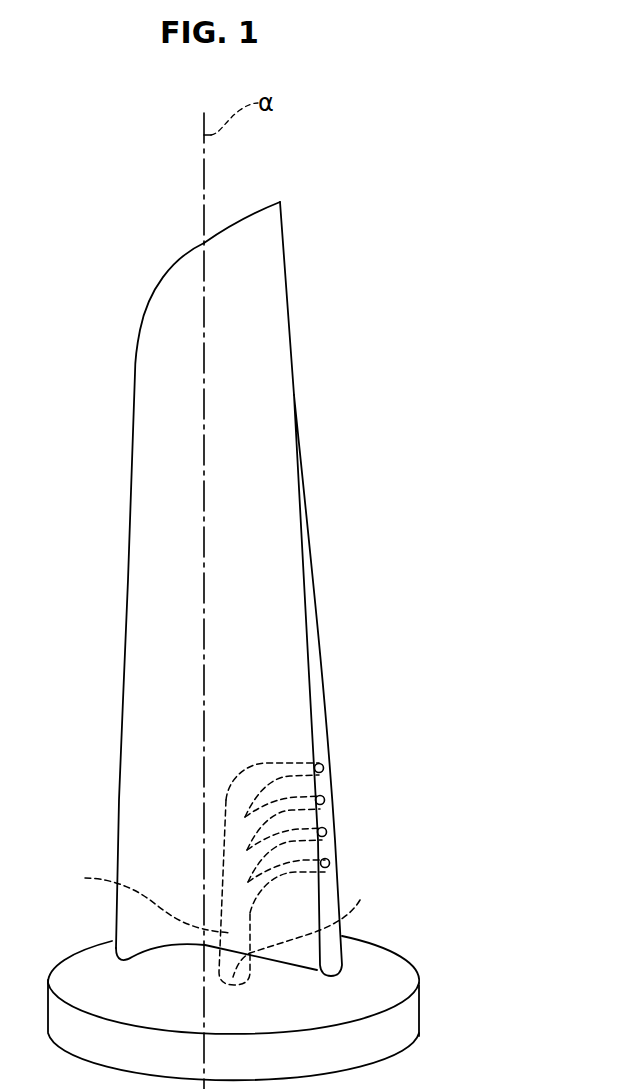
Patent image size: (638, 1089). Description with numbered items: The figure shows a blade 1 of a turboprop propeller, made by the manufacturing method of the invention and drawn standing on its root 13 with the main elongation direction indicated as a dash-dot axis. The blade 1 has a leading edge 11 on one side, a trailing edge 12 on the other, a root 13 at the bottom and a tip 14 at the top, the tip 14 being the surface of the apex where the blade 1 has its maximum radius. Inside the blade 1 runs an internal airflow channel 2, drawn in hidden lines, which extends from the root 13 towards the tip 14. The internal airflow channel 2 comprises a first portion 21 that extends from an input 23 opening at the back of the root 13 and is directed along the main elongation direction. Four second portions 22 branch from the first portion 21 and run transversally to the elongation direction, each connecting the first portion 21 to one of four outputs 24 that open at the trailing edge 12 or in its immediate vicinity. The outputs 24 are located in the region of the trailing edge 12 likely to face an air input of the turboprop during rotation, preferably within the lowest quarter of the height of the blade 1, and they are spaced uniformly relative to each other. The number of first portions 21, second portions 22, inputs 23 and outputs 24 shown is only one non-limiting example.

The blade 1 is at (227, 561).
The internal airflow channel 2 is at (224, 840).
The leading edge 11 is at (133, 453).
The trailing edge 12 is at (312, 633).
The root 13 is at (368, 980).
The tip 14 is at (243, 220).
The first portion 21 is at (144, 902).
The second portion 22 is at (290, 763).
The input 23 is at (307, 927).
The output 24 is at (324, 768).